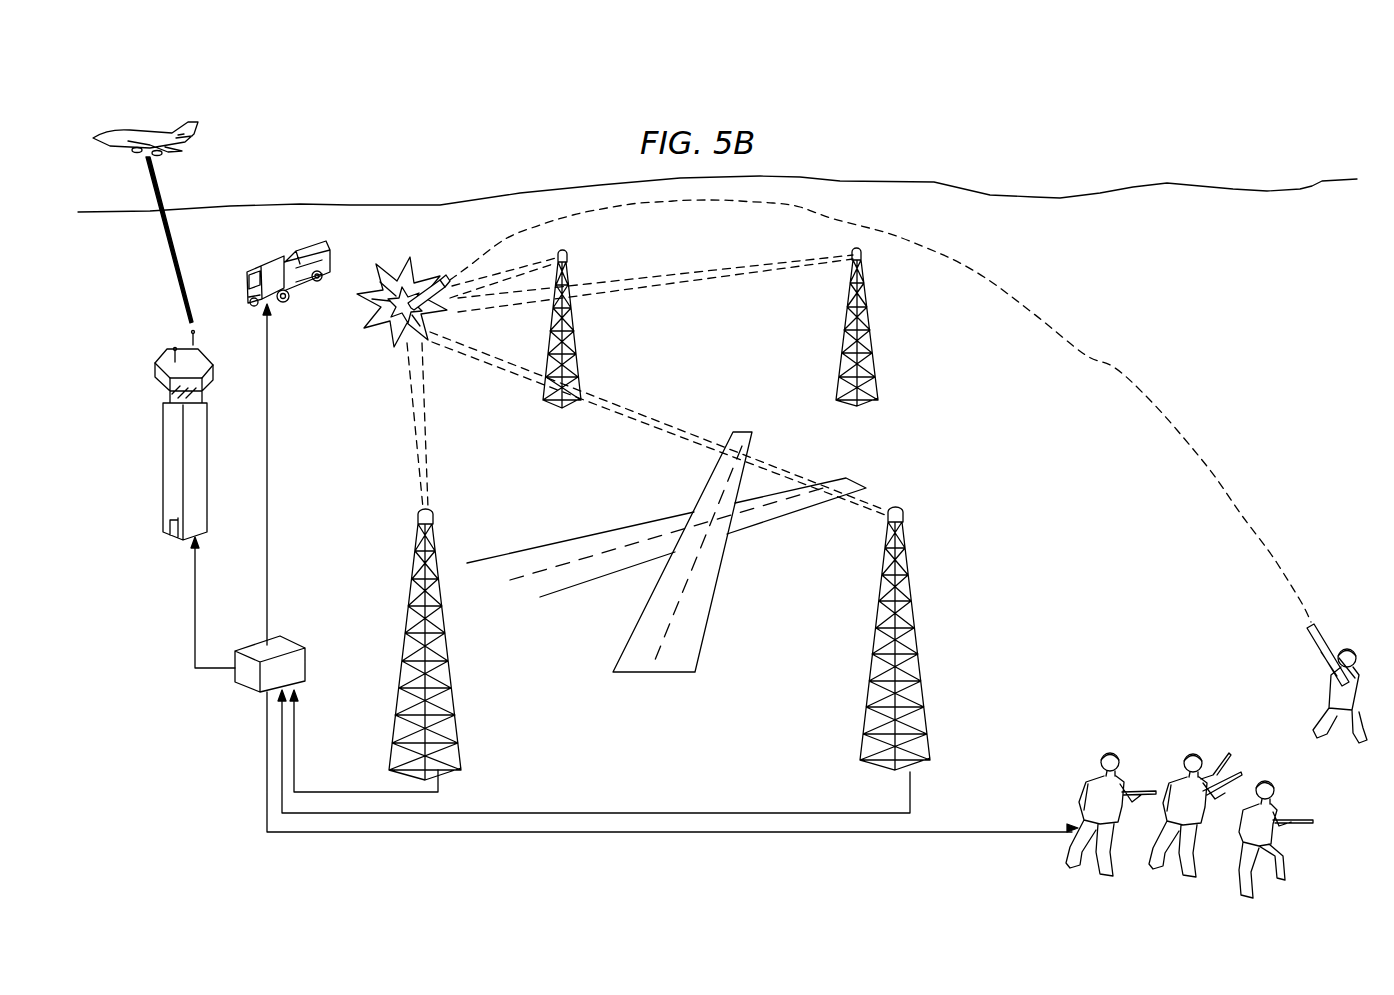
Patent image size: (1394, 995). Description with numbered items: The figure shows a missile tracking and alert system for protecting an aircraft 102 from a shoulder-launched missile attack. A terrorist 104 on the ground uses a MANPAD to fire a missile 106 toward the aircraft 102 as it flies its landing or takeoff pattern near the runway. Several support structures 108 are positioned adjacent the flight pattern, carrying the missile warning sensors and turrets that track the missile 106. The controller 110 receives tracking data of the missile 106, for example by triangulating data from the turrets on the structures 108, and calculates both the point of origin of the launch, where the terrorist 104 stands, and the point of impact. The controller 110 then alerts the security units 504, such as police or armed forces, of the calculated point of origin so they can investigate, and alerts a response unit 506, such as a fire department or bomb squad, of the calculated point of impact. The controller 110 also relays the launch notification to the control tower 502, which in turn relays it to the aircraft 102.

The aircraft 102 is at (121, 133).
The terrorist 104 is at (1350, 645).
The missile 106 is at (441, 279).
The support structures 108 is at (922, 660).
The controller 110 is at (248, 686).
The control tower 502 is at (168, 437).
The security units 504 is at (1305, 837).
The response unit 506 is at (266, 263).